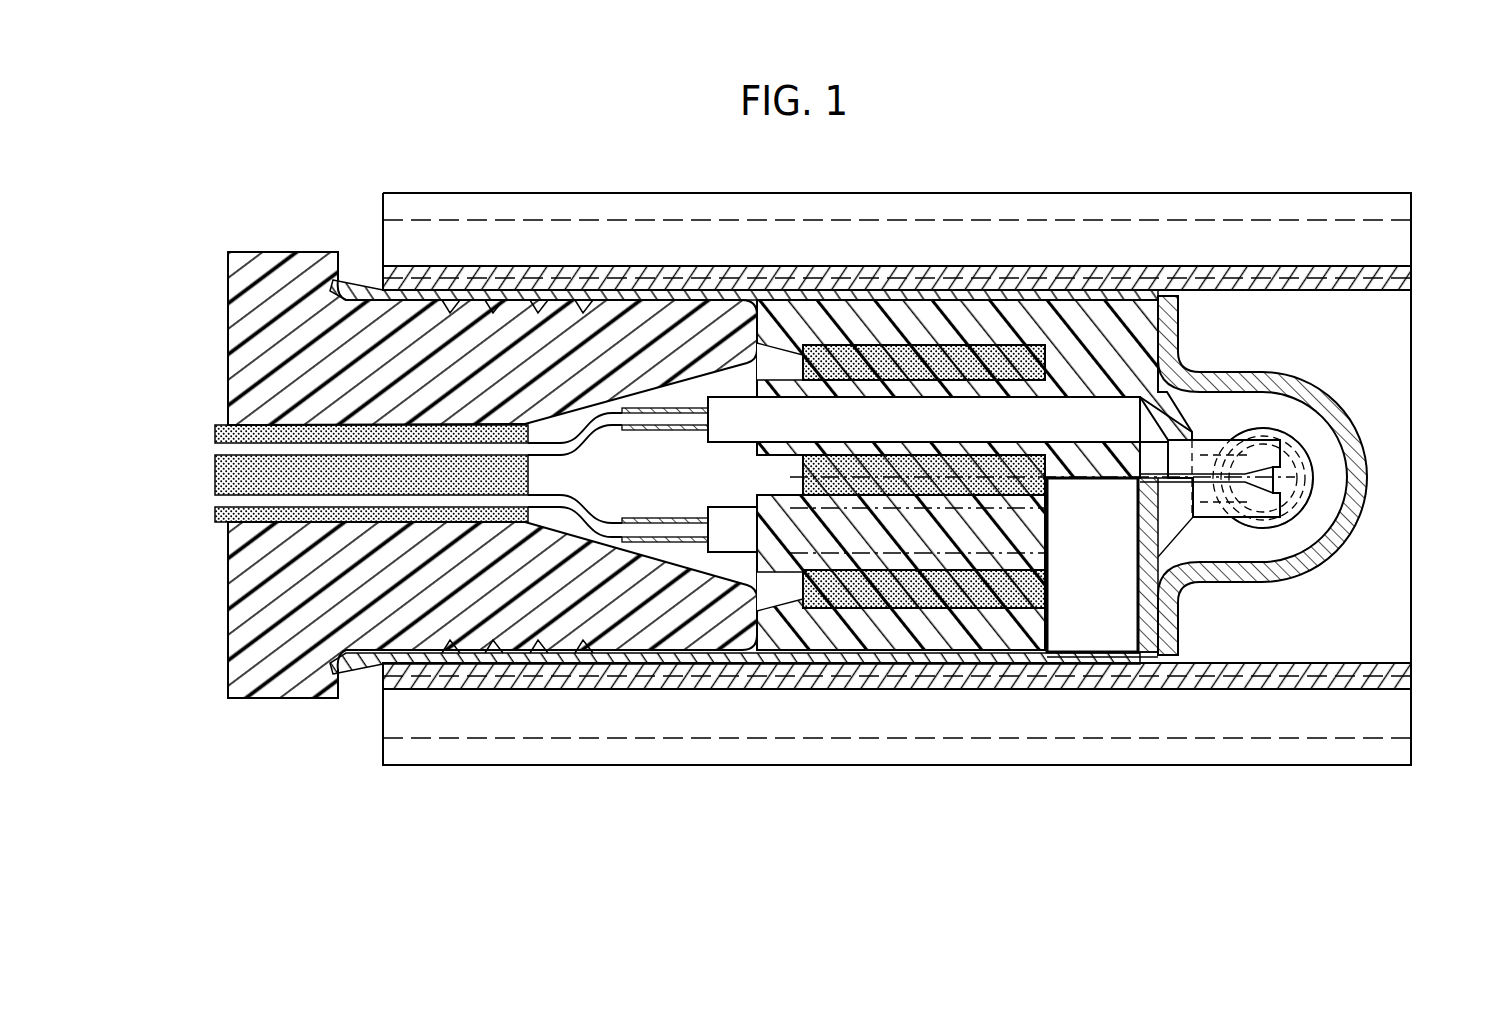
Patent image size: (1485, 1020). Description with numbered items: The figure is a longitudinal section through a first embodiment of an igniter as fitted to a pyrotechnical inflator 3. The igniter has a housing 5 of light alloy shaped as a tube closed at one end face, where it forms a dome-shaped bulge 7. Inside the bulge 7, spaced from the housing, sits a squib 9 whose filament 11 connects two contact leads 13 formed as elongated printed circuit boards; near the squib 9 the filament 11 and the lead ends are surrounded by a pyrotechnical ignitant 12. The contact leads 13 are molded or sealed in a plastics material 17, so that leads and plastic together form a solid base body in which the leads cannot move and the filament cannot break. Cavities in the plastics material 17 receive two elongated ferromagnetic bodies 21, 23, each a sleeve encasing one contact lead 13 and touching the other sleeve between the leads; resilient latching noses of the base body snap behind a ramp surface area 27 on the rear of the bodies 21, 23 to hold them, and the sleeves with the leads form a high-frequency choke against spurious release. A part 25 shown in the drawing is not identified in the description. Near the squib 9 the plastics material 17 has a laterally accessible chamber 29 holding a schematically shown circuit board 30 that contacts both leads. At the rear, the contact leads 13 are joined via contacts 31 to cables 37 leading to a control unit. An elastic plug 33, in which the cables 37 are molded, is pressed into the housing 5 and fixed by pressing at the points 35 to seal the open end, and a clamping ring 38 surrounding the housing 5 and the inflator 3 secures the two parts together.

The pyrotechnical inflator 3 is at (1350, 237).
The housing 5 is at (904, 662).
The dome-shaped bulge 7 is at (1300, 566).
The squib 9 is at (1306, 432).
The filament 11 is at (1303, 466).
The pyrotechnical ignitant 12 is at (1307, 502).
The contact leads 13 is at (1140, 437).
The plastics material 17 is at (1090, 340).
The ferromagnetic body 21 is at (940, 300).
The ferromagnetic body 23 is at (835, 480).
The lower insulator block 25 is at (755, 654).
The ramp surface area 27 is at (803, 612).
The chamber 29 is at (1060, 650).
The circuit board 30 is at (1108, 617).
The contacts 31 is at (662, 519).
The elastic plug 33 is at (360, 665).
The pressing points 35 is at (450, 652).
The cables 37 is at (325, 500).
The clamping ring 38 is at (1393, 277).